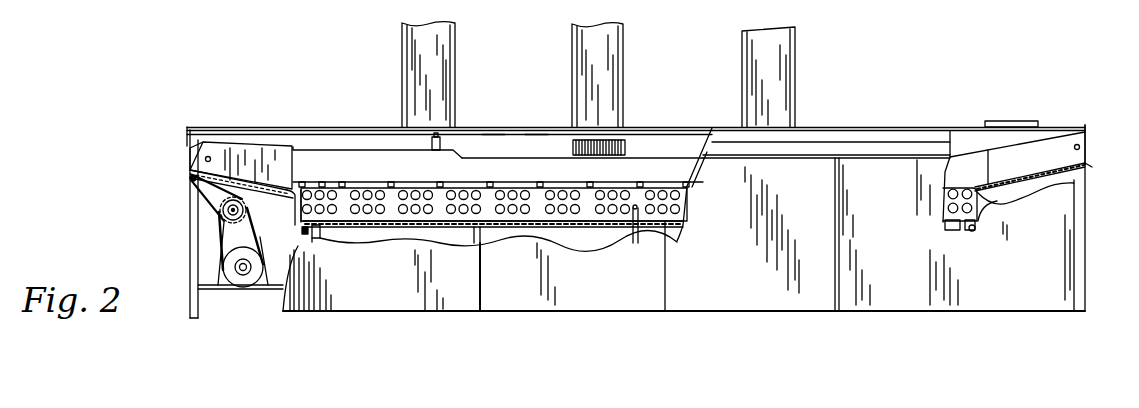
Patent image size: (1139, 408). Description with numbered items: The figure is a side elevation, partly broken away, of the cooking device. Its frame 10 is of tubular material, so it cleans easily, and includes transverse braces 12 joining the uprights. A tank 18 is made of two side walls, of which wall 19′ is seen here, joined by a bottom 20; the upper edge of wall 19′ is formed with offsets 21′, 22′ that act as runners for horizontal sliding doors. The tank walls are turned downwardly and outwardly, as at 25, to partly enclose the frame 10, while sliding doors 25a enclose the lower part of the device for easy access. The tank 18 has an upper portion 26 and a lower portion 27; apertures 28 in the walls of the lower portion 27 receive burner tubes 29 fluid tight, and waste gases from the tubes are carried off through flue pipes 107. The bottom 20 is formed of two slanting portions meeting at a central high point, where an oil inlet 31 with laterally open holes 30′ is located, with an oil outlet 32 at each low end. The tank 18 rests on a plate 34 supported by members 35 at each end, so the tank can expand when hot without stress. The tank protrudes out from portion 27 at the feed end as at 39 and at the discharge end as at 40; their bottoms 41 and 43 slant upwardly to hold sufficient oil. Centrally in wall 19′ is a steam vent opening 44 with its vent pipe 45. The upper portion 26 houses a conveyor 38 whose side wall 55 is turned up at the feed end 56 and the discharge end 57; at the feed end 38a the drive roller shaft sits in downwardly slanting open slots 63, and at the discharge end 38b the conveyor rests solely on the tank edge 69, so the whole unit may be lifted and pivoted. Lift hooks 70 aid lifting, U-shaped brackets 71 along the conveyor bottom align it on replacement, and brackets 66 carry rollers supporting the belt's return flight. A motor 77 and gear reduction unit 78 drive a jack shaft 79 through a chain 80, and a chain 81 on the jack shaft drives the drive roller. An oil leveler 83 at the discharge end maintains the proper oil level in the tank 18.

The frame 10 is at (186, 262).
The transverse braces 12 is at (228, 290).
The tank 18 is at (187, 129).
The side wall 19′ is at (341, 140).
The bottom 20 is at (457, 228).
The offset 21′ is at (494, 134).
The offset 22′ is at (538, 134).
The downwardly and outwardly turned wall portion 25 is at (875, 134).
The sliding doors 25a is at (704, 313).
The upper portion 26 is at (705, 151).
The lower portion 27 is at (689, 207).
The apertures 28 is at (565, 182).
The burner tubes 29 is at (413, 191).
The laterally open holes 30′ is at (650, 227).
The oil inlet 31 is at (634, 232).
The oil outlet 32 is at (320, 240).
The plate 34 is at (394, 242).
The supporting members 35 is at (302, 234).
The conveyor 38 is at (290, 142).
The feed end 38a is at (252, 142).
The discharge end 38b is at (1013, 158).
The protrusion 39 is at (200, 141).
The protrusion 40 is at (1050, 138).
The bottom 41 is at (266, 194).
The bottom 43 is at (1043, 180).
The steam vent opening 44 is at (573, 150).
The vent pipe 45 is at (576, 50).
The side wall 55 is at (499, 161).
The upturned feed end 56 is at (191, 174).
The upturned discharge end 57 is at (1084, 156).
The open slots 63 is at (203, 156).
The brackets 66 is at (392, 187).
The tank edge 69 is at (1089, 164).
The lift hooks 70 is at (438, 127).
The U-shaped brackets 71 is at (322, 187).
The motor 77 is at (257, 242).
The gear reduction unit 78 is at (262, 267).
The jack shaft 79 is at (246, 212).
The chain 80 is at (225, 243).
The chain 81 is at (211, 190).
The oil leveler 83 is at (1005, 116).
The flue pipe 107 is at (401, 50).